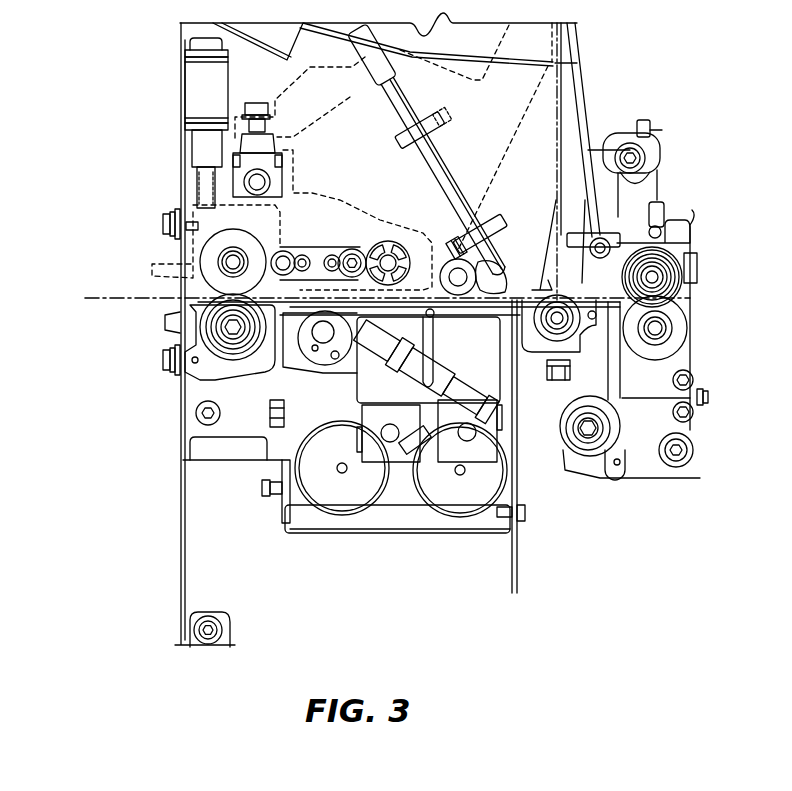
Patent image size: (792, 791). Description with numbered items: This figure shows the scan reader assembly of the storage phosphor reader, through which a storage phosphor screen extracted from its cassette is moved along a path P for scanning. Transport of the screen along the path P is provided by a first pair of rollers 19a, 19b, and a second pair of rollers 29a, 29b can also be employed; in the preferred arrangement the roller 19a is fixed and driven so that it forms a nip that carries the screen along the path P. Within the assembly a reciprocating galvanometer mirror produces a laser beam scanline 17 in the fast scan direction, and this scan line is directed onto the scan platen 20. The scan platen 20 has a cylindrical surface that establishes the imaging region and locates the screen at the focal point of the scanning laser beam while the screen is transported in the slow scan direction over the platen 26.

The laser beam scanline 17 is at (556, 182).
The roller 19a is at (672, 258).
The roller 19b is at (677, 323).
The scan platen 20 is at (545, 288).
The platen 26 is at (443, 248).
The roller 29a is at (213, 333).
The roller 29b is at (210, 261).
The path P is at (89, 298).